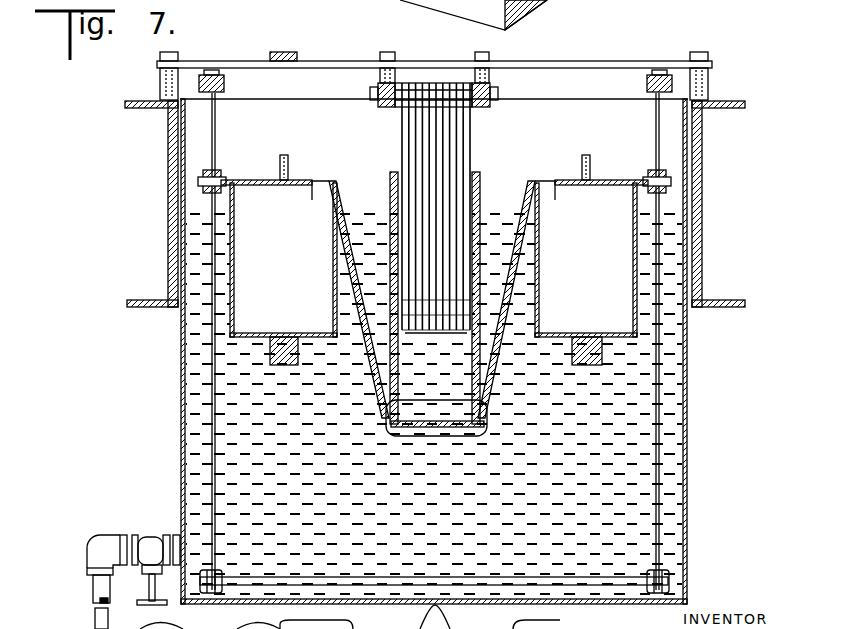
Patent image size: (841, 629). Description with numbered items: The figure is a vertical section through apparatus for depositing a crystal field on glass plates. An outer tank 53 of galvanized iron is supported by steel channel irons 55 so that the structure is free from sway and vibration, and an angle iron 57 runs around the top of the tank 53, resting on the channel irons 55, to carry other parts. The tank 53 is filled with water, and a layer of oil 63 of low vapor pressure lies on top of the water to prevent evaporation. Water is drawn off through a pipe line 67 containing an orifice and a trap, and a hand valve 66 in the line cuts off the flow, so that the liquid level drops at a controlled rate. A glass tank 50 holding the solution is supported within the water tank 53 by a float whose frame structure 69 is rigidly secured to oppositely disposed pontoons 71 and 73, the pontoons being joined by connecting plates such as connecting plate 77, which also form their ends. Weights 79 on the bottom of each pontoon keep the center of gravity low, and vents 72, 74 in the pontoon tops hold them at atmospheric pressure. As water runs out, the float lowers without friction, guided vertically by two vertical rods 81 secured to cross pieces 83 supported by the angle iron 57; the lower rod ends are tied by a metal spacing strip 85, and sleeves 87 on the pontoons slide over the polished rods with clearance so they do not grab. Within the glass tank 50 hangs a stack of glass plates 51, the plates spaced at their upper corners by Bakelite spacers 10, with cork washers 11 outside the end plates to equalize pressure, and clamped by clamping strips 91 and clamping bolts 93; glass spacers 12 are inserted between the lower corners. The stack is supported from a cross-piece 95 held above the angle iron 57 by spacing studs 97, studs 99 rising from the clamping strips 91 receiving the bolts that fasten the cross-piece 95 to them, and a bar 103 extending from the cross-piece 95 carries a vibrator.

The Bakelite spacers 10 is at (426, 83).
The cork washers 11 is at (398, 83).
The glass spacers 12 is at (425, 333).
The glass tank 50 is at (390, 243).
The stack of glass plates 51 is at (480, 147).
The outer tank 53 is at (182, 388).
The steel channel irons 55 is at (168, 258).
The angle iron 57 is at (165, 101).
The layer of oil 63 is at (683, 205).
The hand valve 66 is at (146, 582).
The pipe line 67 is at (100, 603).
The frame structure 69 is at (500, 370).
The pontoon 71 is at (586, 260).
The vent 72 is at (590, 166).
The pontoon 73 is at (283, 260).
The vent 74 is at (284, 166).
The connecting plate 77 is at (512, 195).
The weights 79 is at (290, 365).
The vertical rods 81 is at (215, 478).
The cross pieces 83 is at (224, 83).
The metal spacing strip 85 is at (475, 580).
The sleeves 87 is at (223, 176).
The clamping strips 91 is at (386, 107).
The clamping bolts 93 is at (372, 95).
The cross-piece 95 is at (583, 61).
The spacing studs 97 is at (160, 78).
The studs 99 is at (380, 80).
The bar 103 is at (284, 50).